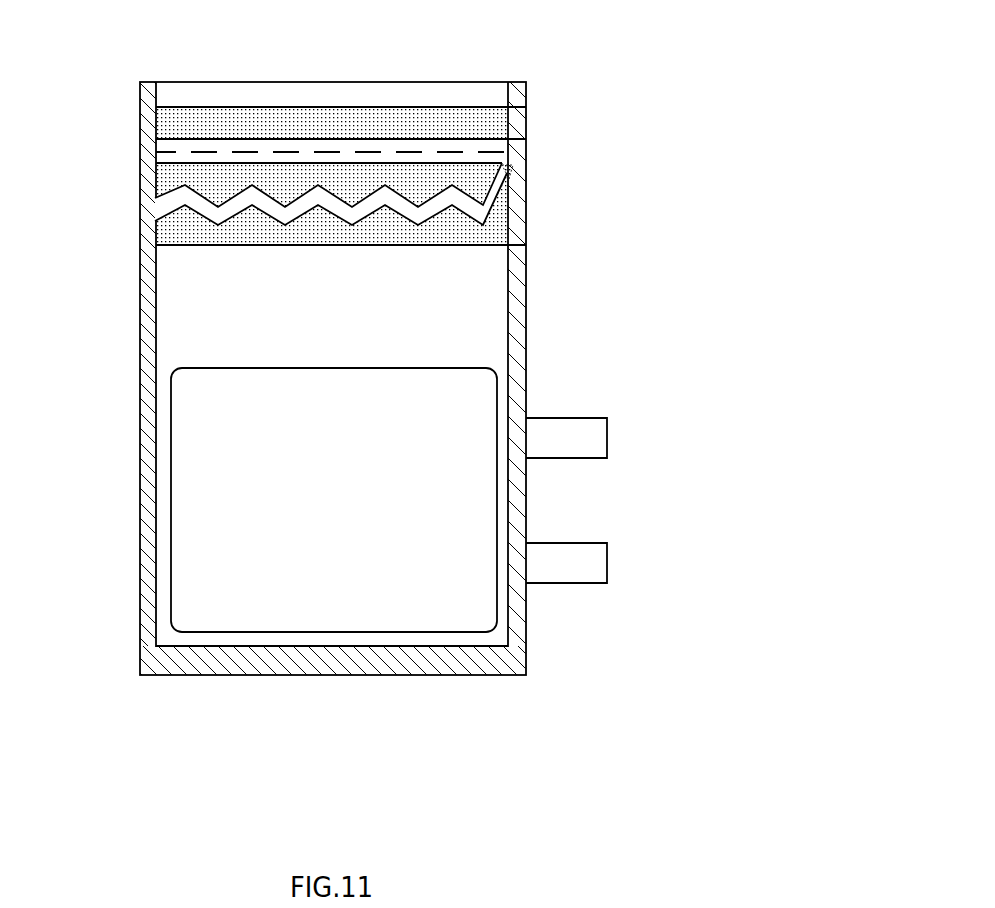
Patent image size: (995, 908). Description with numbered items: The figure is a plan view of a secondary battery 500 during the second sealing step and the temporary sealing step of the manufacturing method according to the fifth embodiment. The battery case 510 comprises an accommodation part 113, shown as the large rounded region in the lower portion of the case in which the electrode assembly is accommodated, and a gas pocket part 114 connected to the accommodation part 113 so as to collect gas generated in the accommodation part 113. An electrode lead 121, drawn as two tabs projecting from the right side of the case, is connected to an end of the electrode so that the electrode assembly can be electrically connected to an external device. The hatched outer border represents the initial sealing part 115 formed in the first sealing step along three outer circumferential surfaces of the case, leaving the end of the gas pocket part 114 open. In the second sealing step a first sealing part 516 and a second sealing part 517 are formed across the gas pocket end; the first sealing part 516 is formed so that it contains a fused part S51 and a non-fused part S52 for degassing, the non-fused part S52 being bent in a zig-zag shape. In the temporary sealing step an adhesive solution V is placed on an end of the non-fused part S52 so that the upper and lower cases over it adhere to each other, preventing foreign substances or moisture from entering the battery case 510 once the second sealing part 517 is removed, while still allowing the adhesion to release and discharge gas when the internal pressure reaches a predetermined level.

The secondary battery 500 is at (673, 34).
The battery case 510 is at (130, 83).
The second sealing part 517 is at (490, 120).
The first sealing part 516 is at (490, 237).
The adhesive solution V is at (512, 173).
The fused part S51 is at (155, 180).
The non-fused part for degassing S52 is at (155, 207).
The gas pocket part 114 is at (188, 304).
The initial sealing part 115 is at (167, 667).
The accommodation part 113 is at (333, 610).
The electrode lead 121 is at (570, 578).